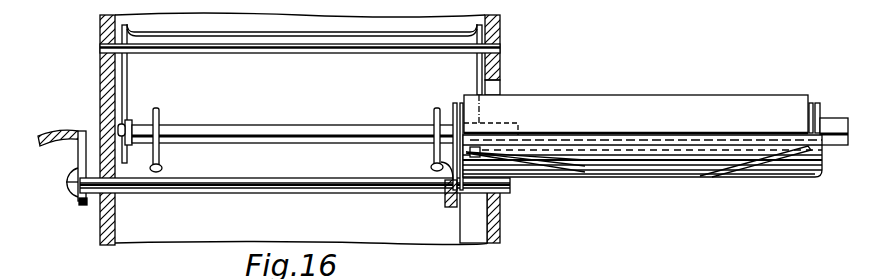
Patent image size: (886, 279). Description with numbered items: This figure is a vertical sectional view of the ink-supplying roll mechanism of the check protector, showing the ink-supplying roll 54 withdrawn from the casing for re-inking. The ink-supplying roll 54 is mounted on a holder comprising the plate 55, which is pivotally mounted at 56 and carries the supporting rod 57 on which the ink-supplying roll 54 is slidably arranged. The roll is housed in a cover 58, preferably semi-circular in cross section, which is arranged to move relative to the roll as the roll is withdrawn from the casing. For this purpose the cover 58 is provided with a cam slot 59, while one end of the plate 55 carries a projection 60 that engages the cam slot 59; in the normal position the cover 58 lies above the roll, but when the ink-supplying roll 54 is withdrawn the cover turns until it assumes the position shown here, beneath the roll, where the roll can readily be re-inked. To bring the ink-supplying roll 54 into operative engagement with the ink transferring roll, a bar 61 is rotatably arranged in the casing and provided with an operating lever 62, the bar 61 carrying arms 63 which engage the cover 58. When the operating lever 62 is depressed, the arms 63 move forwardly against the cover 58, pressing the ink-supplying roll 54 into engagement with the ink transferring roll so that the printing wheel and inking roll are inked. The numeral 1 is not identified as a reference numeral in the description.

The casing wall 1 is at (108, 83).
The ink-supplying roll 54 is at (656, 120).
The plate 55 is at (302, 93).
The pivot 56 is at (255, 47).
The supporting rod 57 is at (265, 131).
The cover 58 is at (642, 165).
The cam slot 59 is at (770, 160).
The projection 60 is at (446, 185).
The bar 61 is at (262, 182).
The operating lever 62 is at (61, 135).
The arms 63 is at (160, 152).